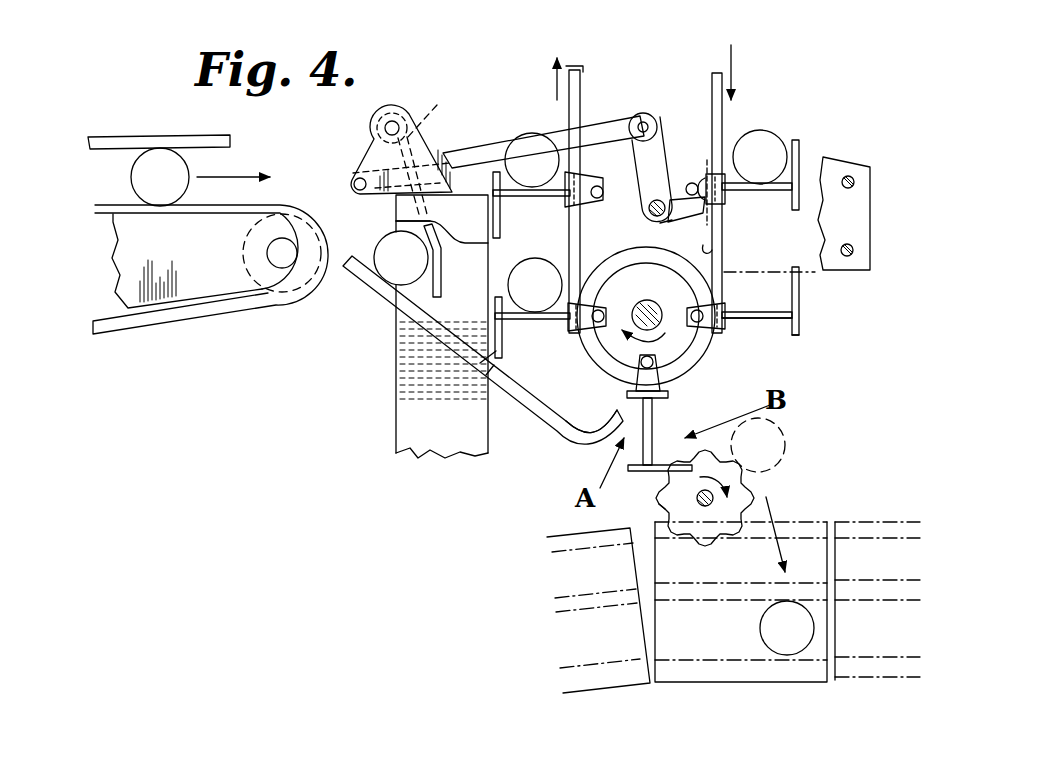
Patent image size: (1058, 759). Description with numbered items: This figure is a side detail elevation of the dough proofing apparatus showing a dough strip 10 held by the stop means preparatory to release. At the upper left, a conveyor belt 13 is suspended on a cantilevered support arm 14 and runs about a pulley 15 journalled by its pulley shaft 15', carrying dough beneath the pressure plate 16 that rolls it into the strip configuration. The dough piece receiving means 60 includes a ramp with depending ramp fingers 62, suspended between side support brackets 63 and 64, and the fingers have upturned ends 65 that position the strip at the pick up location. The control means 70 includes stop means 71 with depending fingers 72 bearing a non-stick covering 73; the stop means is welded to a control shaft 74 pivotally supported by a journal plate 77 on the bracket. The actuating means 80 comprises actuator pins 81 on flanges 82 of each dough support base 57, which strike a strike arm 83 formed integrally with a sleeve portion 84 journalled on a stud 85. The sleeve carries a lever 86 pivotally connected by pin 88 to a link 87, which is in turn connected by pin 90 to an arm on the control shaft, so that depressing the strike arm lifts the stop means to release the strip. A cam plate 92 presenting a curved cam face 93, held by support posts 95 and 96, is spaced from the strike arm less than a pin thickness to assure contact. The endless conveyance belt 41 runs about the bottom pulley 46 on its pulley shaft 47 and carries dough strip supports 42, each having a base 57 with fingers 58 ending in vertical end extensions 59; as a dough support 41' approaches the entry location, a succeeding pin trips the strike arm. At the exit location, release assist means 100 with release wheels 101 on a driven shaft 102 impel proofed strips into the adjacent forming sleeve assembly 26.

The dough strip 10 is at (158, 146).
The conveyor belt 13 is at (167, 320).
The cantilevered support arm 14 is at (125, 308).
The pulley 15 is at (278, 294).
The pulley shaft 15' is at (240, 252).
The pressure plate 16 is at (110, 137).
The forming sleeve assembly 26 is at (548, 625).
The conveyance belt 41 is at (572, 173).
The dough support 41' is at (676, 413).
The dough strip support 42 is at (803, 150).
The bottom pulley 46 is at (594, 335).
The pulley shaft 47 is at (642, 330).
The dough support base 57 is at (708, 187).
The finger 58 is at (798, 333).
The vertical end extension 59 is at (800, 320).
The dough piece receiving means 60 is at (356, 294).
The ramp finger 62 is at (537, 412).
The side support bracket 63 is at (400, 211).
The side support bracket 64 is at (417, 450).
The upturned end 65 is at (572, 433).
The control means 70 is at (415, 108).
The stop means 71 is at (440, 106).
The depending finger 72 is at (441, 266).
The non-stick covering 73 is at (432, 337).
The control shaft 74 is at (392, 118).
The journal plate 77 is at (430, 135).
The actuating means 80 is at (634, 103).
The actuator pin 81 is at (692, 181).
The flange 82 is at (716, 178).
The strike arm 83 is at (358, 178).
The sleeve portion 84 is at (648, 207).
The stud 85 is at (648, 221).
The lever 86 is at (665, 120).
The link 87 is at (510, 150).
The pin 88 is at (638, 125).
The pin 90 is at (355, 182).
The cam plate 92 is at (850, 212).
The curved cam face 93 is at (710, 250).
The support post 95 is at (855, 182).
The support post 96 is at (855, 250).
The release assist means 100 is at (797, 478).
The release wheel 101 is at (690, 525).
The driven shaft 102 is at (712, 506).